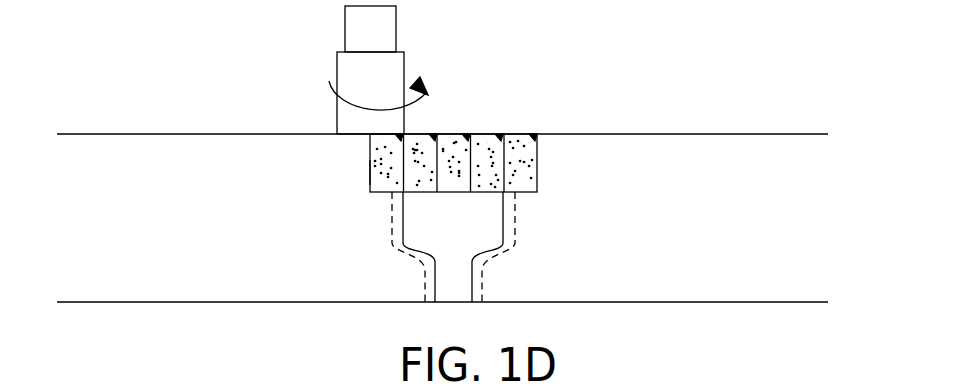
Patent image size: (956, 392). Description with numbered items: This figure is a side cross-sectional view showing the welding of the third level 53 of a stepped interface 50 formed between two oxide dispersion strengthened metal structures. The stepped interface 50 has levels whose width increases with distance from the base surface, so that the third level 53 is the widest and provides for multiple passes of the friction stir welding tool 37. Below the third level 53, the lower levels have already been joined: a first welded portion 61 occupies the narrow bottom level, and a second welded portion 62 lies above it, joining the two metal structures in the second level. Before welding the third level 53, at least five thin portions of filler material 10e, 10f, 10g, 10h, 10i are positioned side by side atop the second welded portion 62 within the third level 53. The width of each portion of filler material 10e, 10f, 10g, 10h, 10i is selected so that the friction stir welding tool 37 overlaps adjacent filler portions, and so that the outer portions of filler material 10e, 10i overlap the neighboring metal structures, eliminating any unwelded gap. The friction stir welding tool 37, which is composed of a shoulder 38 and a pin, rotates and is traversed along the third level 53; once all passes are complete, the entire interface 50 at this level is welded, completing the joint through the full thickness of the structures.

The friction stir welding tool 37 is at (387, 41).
The shoulder 38 is at (385, 98).
The stepped interface 50 is at (565, 142).
The third level 53 is at (370, 172).
The first welded portion 61 is at (465, 284).
The second welded portion 62 is at (465, 225).
The filler material 10e is at (382, 177).
The filler material 10f is at (423, 147).
The filler material 10g is at (453, 150).
The filler material 10h is at (493, 145).
The filler material 10i is at (528, 152).